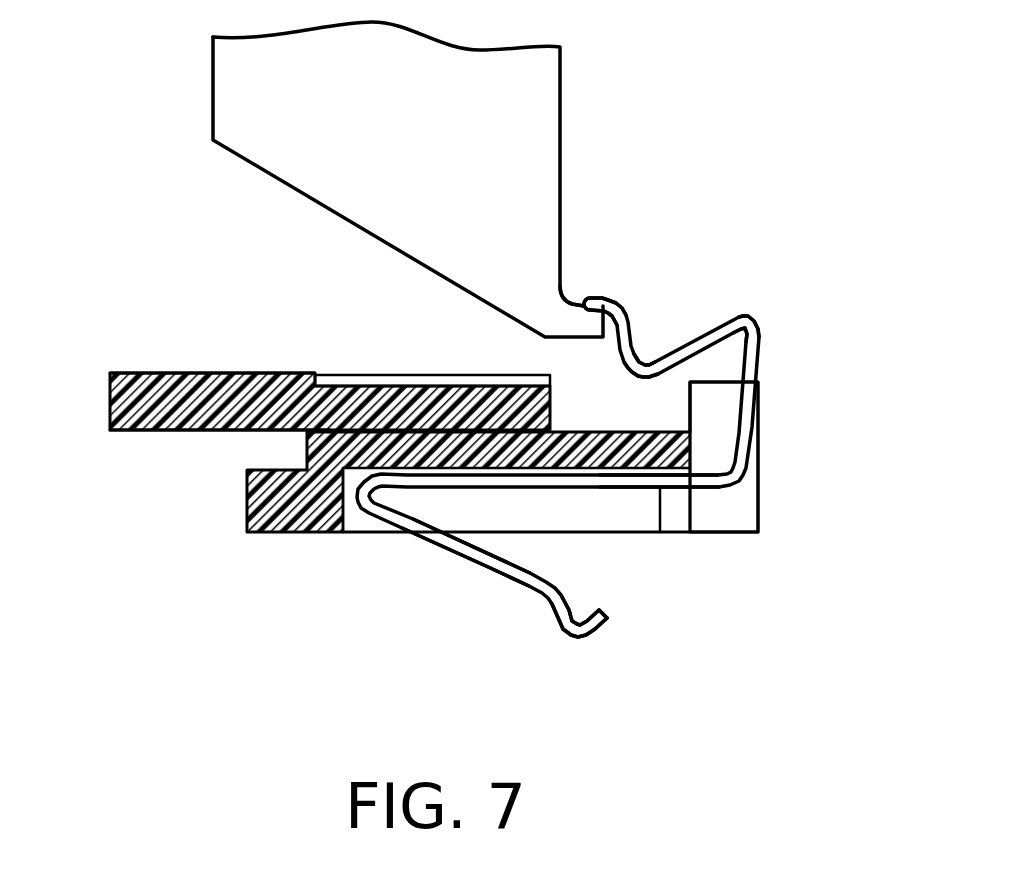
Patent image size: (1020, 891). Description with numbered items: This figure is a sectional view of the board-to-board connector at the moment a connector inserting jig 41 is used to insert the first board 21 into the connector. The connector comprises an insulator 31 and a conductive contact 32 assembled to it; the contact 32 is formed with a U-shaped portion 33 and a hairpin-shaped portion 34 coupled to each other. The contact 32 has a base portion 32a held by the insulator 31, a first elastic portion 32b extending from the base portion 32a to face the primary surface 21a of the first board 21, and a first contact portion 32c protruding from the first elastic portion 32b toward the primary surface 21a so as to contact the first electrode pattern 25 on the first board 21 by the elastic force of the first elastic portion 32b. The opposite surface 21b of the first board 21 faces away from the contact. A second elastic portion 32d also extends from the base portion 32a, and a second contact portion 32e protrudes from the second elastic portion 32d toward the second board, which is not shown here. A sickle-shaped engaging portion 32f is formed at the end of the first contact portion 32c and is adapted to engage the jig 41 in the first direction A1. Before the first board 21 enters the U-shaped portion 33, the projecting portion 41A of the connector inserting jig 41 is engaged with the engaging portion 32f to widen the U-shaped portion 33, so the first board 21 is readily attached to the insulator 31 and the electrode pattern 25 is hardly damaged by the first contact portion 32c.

The first board 21 is at (149, 383).
The primary surface 21a is at (112, 374).
The lower surface of circuit board 21b is at (123, 430).
The first electrode pattern 25 is at (412, 381).
The insulator 31 is at (247, 487).
The conductive contact 32 is at (780, 355).
The base portion 32a is at (607, 477).
The first elastic portion 32b is at (748, 322).
The first contact portion 32c is at (640, 360).
The second elastic portion 32d is at (480, 568).
The second contact portion 32e is at (575, 640).
The engaging portion 32f is at (617, 313).
The U-shaped portion 33 is at (745, 398).
The hairpin-shaped portion 34 is at (385, 523).
The connector inserting jig 41 is at (540, 148).
The projecting portion 41A is at (575, 318).
The first direction A1 is at (851, 400).